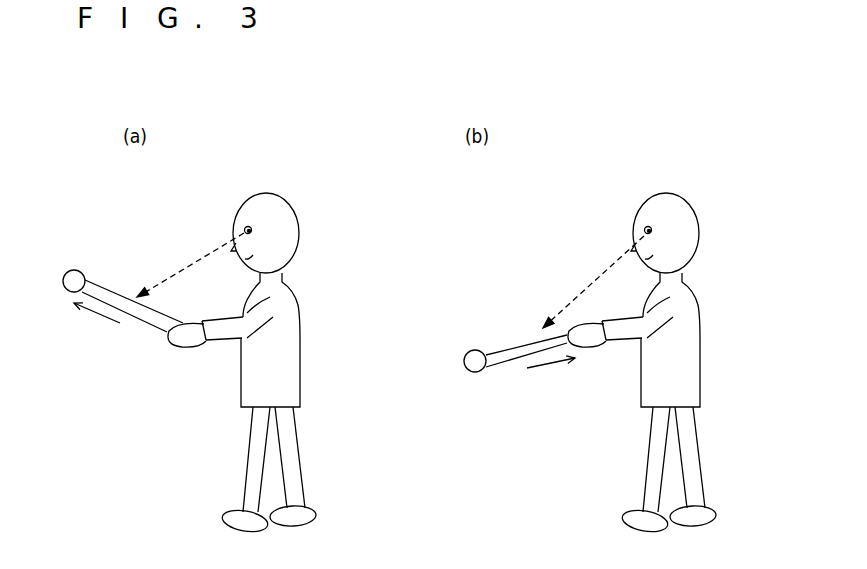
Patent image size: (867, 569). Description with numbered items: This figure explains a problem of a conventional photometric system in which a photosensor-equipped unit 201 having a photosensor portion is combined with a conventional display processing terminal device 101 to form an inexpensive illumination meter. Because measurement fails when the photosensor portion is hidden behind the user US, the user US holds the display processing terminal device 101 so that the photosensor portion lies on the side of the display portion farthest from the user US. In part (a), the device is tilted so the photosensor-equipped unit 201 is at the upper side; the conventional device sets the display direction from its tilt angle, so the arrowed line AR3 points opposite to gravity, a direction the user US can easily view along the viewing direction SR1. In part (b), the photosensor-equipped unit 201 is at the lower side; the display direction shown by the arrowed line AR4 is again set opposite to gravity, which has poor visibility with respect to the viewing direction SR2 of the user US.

The user US is at (296, 210).
The display processing terminal device 101 is at (140, 327).
The photosensor-equipped unit 201 is at (65, 271).
The viewing direction SR1 is at (177, 268).
The viewing direction SR2 is at (588, 280).
The arrowed line AR3 is at (99, 318).
The arrowed line AR4 is at (545, 367).